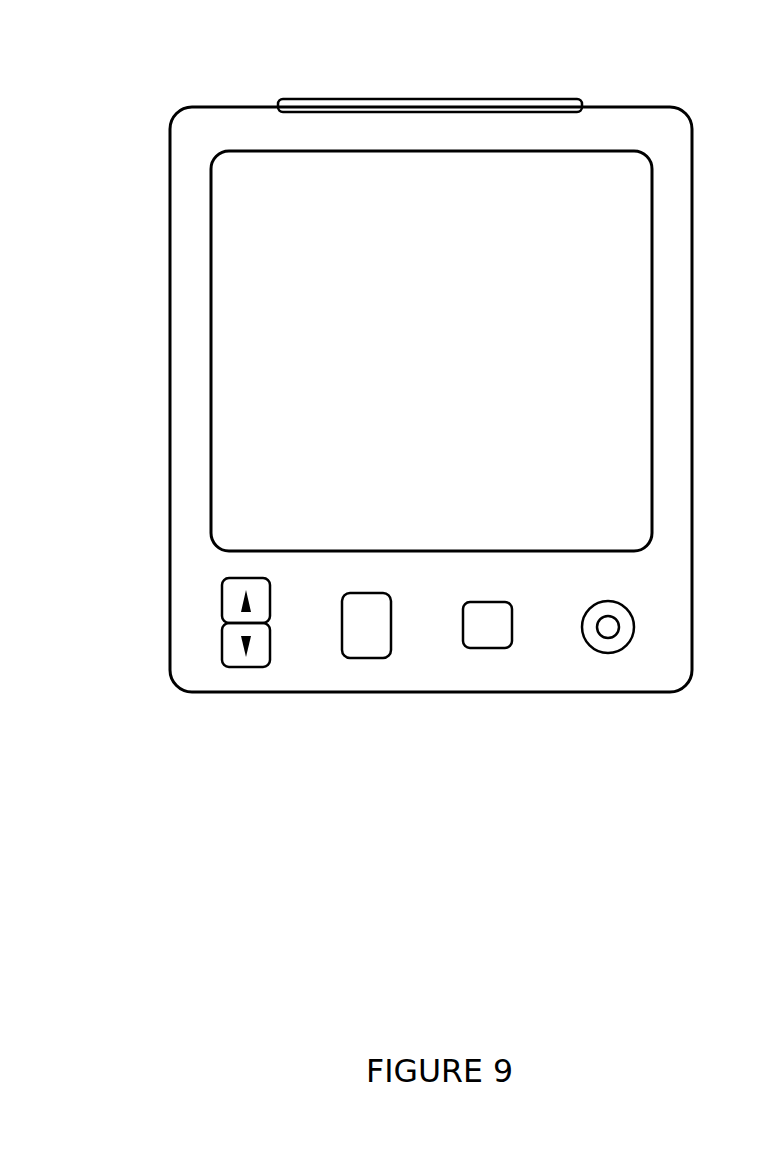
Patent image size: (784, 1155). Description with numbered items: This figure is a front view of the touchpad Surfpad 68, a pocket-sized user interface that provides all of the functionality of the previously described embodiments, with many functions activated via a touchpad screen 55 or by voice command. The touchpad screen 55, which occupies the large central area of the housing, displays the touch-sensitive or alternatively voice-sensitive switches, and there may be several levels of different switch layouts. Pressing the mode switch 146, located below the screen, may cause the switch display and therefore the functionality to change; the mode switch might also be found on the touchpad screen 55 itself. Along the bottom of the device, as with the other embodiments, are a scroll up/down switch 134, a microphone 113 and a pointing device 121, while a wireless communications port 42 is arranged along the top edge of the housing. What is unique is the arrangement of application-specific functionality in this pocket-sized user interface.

The touchpad Surfpad 68 is at (114, 76).
The wireless communications port 42 is at (517, 97).
The touchpad screen 55 is at (431, 351).
The scroll up/down switch 134 is at (269, 622).
The microphone 113 is at (366, 625).
The mode switch 146 is at (487, 625).
The pointing device 121 is at (608, 616).